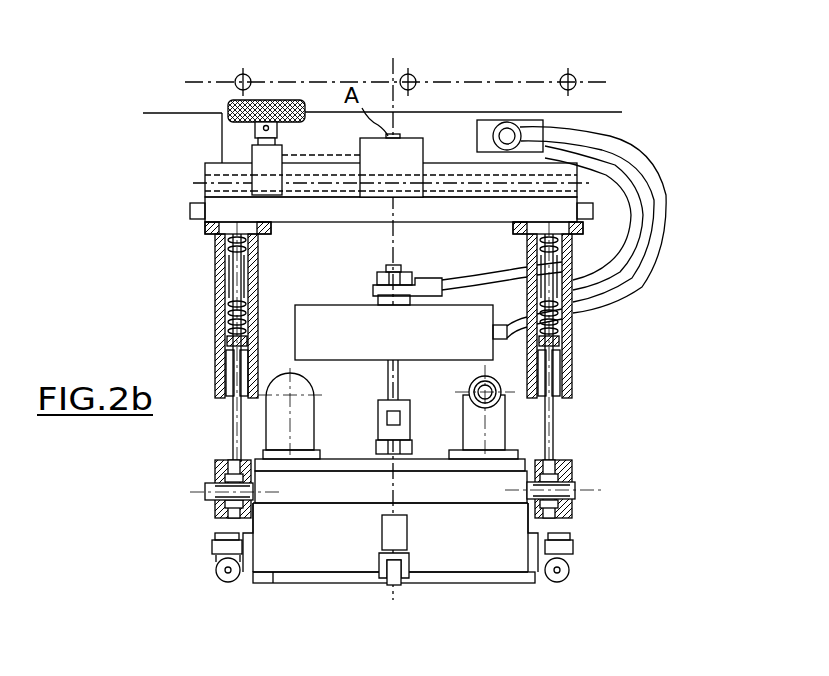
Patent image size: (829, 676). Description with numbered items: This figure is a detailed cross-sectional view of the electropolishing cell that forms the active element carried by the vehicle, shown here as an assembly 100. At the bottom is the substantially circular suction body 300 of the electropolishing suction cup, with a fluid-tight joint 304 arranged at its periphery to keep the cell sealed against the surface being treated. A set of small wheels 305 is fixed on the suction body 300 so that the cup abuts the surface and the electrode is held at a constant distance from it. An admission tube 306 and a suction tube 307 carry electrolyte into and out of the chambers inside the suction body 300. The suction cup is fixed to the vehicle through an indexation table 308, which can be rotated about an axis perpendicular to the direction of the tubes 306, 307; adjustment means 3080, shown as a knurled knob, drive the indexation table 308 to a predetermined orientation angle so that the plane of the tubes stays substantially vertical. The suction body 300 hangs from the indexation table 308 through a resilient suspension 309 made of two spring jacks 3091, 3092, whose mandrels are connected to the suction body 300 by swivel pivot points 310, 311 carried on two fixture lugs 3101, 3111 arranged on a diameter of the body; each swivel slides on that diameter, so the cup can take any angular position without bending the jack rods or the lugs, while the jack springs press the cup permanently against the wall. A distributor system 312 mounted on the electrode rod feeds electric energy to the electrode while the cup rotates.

The machine axis / assembly 100 is at (465, 68).
The suction body 300 is at (518, 525).
The fluid-tight joint 304 is at (530, 580).
The small wheels 305 is at (217, 570).
The admission tube 306 is at (297, 418).
The suction tube 307 is at (463, 435).
The indexation table 308 is at (189, 166).
The adjustment means 3080 is at (222, 128).
The resilient suspension 309 is at (517, 249).
The spring jack 3091 is at (216, 340).
The spring jack 3092 is at (570, 368).
The swivel pivot point 310 is at (214, 474).
The fixture lug 3101 is at (212, 498).
The swivel pivot point 311 is at (573, 471).
The fixture lug 3111 is at (572, 496).
The distributor system 312 is at (340, 330).